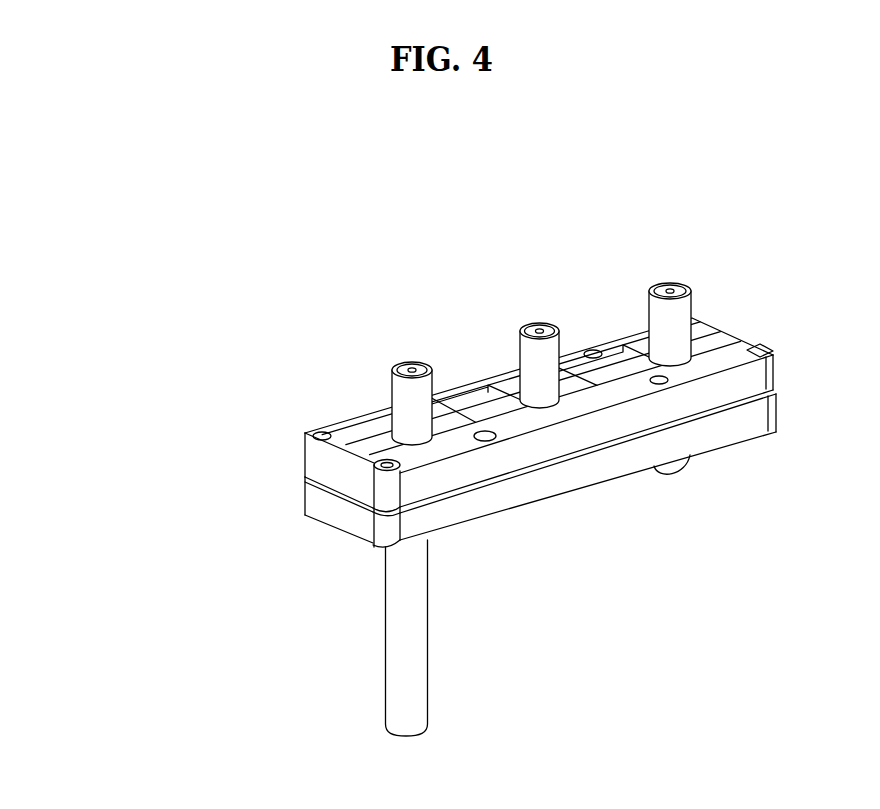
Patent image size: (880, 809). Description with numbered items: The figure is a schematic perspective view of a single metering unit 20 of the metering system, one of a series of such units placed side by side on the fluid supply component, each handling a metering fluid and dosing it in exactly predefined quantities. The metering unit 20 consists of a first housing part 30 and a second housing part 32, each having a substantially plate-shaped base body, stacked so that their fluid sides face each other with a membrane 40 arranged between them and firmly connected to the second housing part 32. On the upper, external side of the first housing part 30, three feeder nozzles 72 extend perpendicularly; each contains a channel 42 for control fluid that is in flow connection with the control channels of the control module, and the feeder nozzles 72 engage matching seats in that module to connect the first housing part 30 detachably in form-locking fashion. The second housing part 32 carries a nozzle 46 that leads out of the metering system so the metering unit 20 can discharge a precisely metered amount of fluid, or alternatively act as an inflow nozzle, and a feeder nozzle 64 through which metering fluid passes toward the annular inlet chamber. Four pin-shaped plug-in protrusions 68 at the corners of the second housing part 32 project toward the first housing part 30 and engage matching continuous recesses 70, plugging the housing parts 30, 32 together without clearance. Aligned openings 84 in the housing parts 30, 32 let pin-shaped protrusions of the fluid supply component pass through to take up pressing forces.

The metering unit 20 is at (118, 453).
The first housing part 30 is at (307, 460).
The second housing part 32 is at (317, 515).
The membrane 40 is at (595, 450).
The channel 42 is at (413, 367).
The nozzle 46 is at (402, 700).
The feeder nozzle 64 is at (687, 458).
The plug-in protrusion 68 is at (377, 512).
The recess 70 is at (760, 346).
The feeder nozzle 72 is at (397, 400).
The opening 84 is at (472, 431).